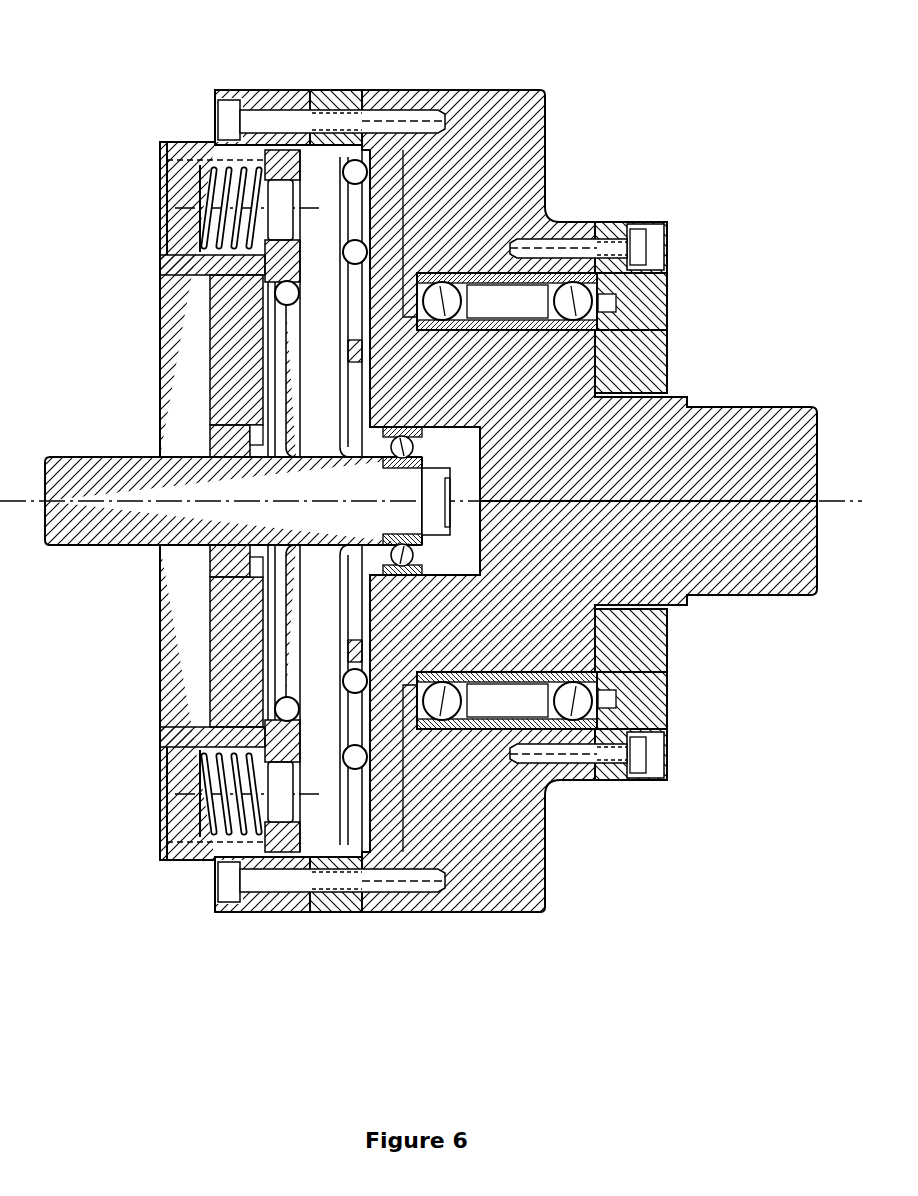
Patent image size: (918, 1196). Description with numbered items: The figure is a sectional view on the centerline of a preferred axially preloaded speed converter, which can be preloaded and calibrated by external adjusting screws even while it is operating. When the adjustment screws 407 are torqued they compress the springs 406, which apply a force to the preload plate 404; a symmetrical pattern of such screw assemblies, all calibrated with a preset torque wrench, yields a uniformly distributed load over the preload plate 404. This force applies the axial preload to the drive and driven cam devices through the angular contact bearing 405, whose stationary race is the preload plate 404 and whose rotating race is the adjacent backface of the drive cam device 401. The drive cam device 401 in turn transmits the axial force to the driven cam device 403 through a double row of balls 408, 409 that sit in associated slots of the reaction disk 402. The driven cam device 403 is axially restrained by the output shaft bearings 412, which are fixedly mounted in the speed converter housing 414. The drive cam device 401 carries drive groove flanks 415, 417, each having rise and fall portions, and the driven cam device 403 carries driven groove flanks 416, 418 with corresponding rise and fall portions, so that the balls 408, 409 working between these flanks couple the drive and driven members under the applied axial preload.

The drive cam device 401 is at (305, 682).
The reaction disk 402 is at (334, 86).
The driven cam device 403 is at (388, 786).
The preload plate 404 is at (262, 244).
The angular contact bearing 405 is at (272, 707).
The spring 406 is at (213, 165).
The adjustment screw 407 is at (173, 184).
The ball 408 is at (414, 92).
The ball 409 is at (340, 256).
The output shaft bearing 412 is at (453, 729).
The speed converter housing 414 is at (499, 917).
The drive groove flank 415 is at (276, 294).
The driven groove flank 416 is at (367, 240).
The drive groove flank 417 is at (300, 94).
The driven groove flank 418 is at (367, 188).